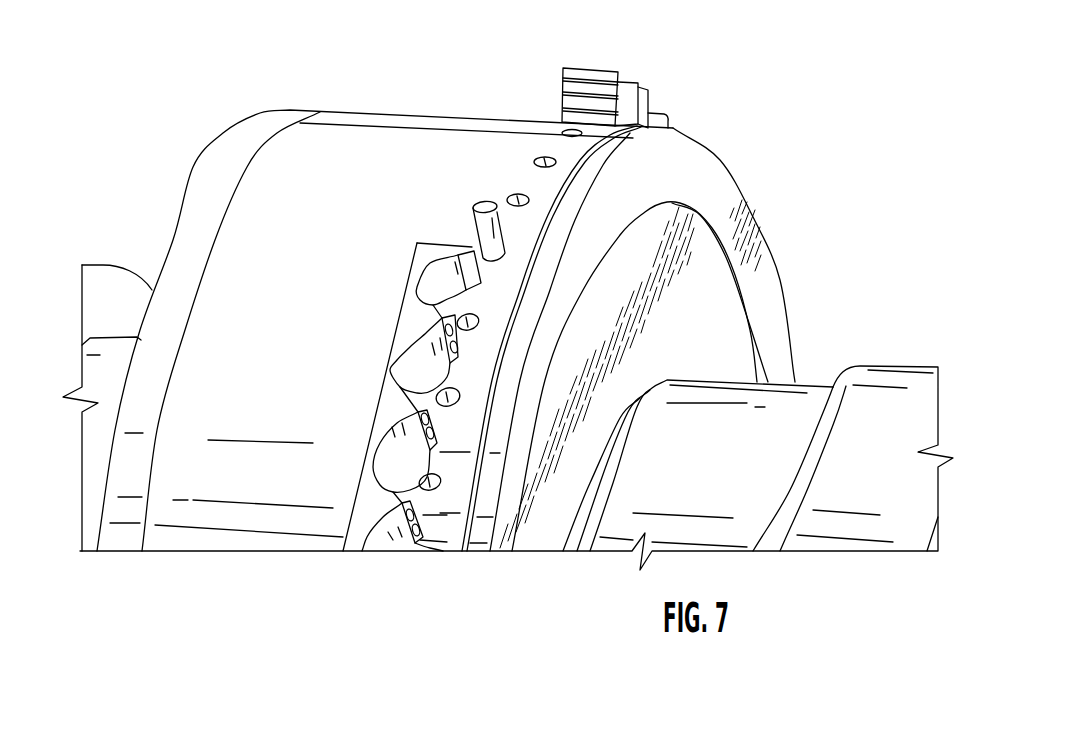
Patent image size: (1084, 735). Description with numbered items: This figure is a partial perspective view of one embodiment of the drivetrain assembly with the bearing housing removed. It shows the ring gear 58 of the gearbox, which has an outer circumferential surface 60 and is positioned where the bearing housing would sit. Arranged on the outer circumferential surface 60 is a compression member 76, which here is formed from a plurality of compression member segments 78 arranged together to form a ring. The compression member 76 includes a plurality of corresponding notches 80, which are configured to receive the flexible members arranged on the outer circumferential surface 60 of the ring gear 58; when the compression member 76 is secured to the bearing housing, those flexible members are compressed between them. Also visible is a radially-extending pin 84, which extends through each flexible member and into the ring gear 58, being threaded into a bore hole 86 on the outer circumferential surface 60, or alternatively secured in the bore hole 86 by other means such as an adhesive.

The ring gear 58 is at (388, 128).
The outer circumferential surface 60 is at (343, 117).
The compression member 76 is at (363, 423).
The compression member segments 78 is at (583, 67).
The notches 80 is at (412, 545).
The radially-extending pin 84 is at (484, 203).
The bore hole 86 is at (517, 195).